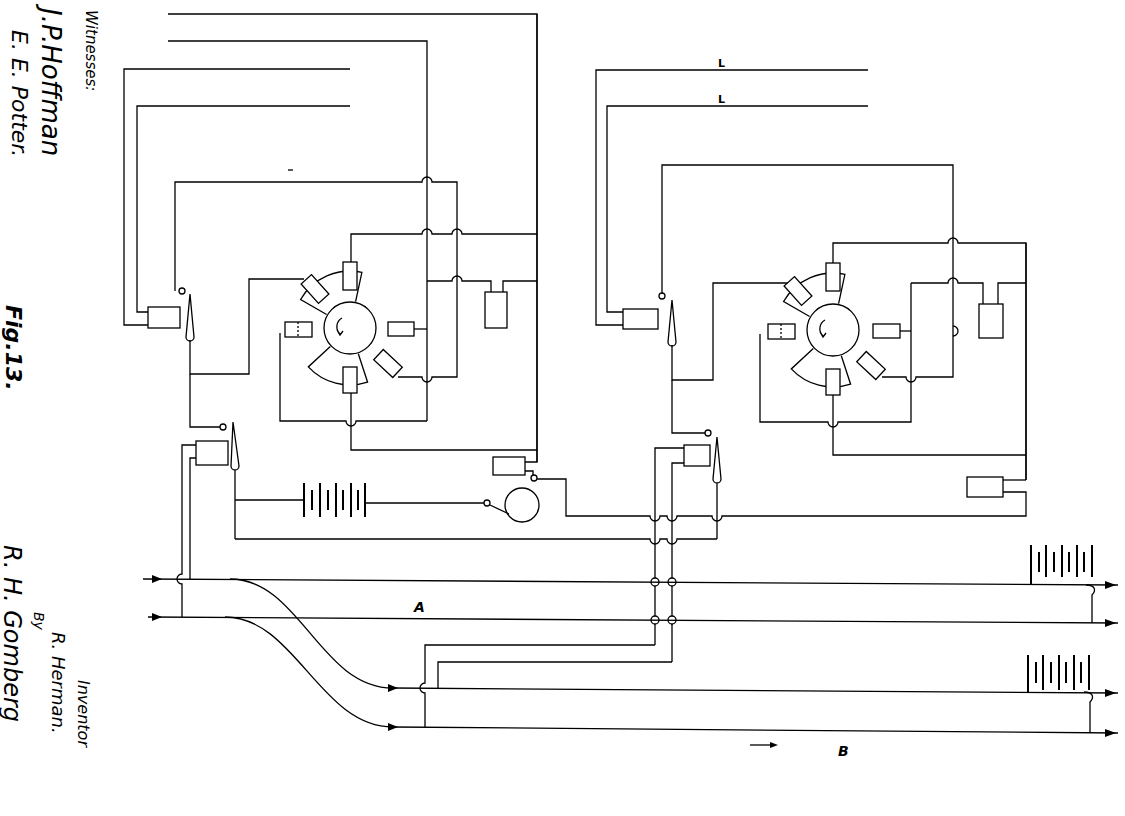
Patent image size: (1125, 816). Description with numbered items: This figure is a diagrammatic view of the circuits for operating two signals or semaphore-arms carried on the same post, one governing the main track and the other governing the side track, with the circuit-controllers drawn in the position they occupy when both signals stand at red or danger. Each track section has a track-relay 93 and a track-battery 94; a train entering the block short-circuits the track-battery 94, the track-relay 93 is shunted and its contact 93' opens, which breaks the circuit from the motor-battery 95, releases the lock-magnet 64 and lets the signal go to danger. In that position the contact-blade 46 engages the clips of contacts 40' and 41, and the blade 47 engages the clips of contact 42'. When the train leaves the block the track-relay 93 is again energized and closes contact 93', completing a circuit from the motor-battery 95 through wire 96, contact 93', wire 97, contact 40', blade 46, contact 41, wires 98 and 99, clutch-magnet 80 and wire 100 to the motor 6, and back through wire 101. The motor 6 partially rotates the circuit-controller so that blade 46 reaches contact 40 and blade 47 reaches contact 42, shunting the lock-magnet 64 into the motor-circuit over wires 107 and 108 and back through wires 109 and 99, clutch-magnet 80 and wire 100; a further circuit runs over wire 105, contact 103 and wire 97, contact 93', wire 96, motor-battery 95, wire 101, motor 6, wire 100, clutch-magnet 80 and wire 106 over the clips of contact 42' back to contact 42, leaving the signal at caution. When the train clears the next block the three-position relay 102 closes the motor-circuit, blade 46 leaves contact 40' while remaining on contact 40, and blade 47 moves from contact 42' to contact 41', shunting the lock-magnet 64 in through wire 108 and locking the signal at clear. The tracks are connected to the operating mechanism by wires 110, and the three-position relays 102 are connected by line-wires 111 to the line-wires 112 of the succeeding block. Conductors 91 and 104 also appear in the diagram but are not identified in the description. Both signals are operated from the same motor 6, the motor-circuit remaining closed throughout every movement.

The motor 6 is at (524, 509).
The contact 40 is at (540, 338).
The contact 40' is at (556, 281).
The contact 41 is at (603, 271).
The contact 41' is at (673, 320).
The contact 42 is at (635, 361).
The contact 42' is at (605, 385).
The contact-blade 46 is at (586, 293).
The contact-blade 47 is at (579, 366).
The lock-magnet 64 is at (744, 323).
The clutch-magnet 80 is at (750, 477).
The wire 91 is at (194, 402).
The track-relay 93 is at (443, 551).
The relay contact 93' is at (471, 471).
The track-battery 94 is at (1060, 607).
The motor-battery 95 is at (345, 498).
The wire 96 is at (269, 489).
The wire 97 is at (679, 408).
The wire 98 is at (688, 349).
The wire 99 is at (537, 383).
The wire 100 is at (538, 470).
The wire 101 is at (437, 500).
The three-position relay 102 is at (403, 326).
The contact 103 is at (434, 306).
The wire 104 is at (473, 329).
The wire 105 is at (564, 266).
The wire 106 is at (688, 424).
The wire 107 is at (595, 355).
The wire 108 is at (705, 290).
The wire 109 is at (764, 292).
The wires 110 is at (546, 678).
The line-wires 111 is at (237, 190).
The line-wires 112 is at (352, 232).